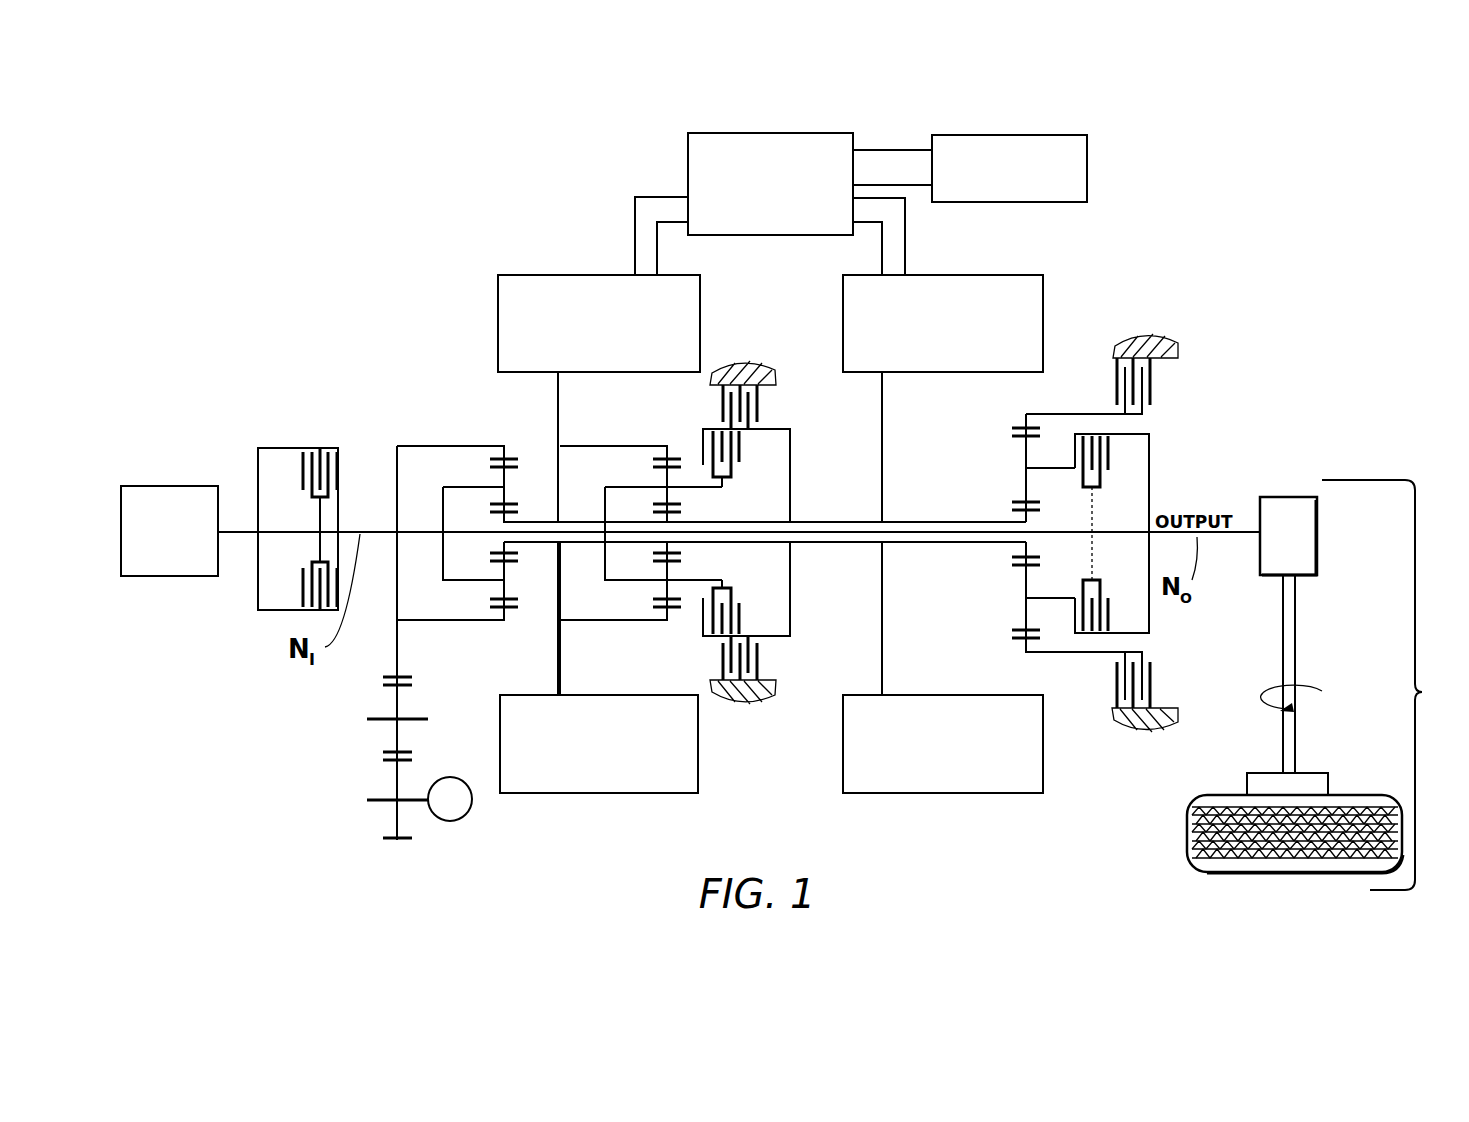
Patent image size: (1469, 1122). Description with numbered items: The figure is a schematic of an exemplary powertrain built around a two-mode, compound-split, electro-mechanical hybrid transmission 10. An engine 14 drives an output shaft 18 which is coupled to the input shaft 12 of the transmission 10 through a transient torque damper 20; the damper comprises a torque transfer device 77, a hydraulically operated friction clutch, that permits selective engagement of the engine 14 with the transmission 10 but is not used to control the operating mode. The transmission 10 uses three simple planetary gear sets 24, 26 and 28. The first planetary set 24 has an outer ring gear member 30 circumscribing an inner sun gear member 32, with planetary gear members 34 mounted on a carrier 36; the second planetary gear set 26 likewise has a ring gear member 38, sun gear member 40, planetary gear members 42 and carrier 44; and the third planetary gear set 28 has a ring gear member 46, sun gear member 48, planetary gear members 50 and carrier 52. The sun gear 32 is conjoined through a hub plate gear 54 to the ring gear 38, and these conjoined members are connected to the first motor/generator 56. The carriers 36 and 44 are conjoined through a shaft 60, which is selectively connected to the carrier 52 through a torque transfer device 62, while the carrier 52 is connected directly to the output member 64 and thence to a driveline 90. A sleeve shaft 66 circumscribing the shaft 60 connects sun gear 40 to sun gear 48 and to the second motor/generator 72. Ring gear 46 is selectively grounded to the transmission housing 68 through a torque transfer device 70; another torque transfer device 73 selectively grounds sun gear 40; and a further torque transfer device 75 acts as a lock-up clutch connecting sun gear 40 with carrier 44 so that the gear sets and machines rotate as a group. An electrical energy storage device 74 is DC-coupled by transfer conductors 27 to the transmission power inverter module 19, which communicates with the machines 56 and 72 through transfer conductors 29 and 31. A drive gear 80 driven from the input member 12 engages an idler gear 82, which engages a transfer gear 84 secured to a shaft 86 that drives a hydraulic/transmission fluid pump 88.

The transmission 10 is at (461, 240).
The input shaft 12 is at (392, 529).
The engine 14 is at (195, 485).
The output shaft 18 is at (245, 529).
The transmission power inverter module 19 is at (687, 152).
The transient torque damper 20 is at (298, 497).
The first planetary gear set 24 is at (478, 538).
The second planetary gear set 26 is at (653, 529).
The transfer conductors 27 is at (892, 148).
The third planetary gear set 28 is at (1037, 533).
The transfer conductors 29 is at (633, 235).
The outer ring gear member 30 is at (510, 458).
The transfer conductors 31 is at (907, 228).
The inner sun gear member 32 is at (520, 493).
The planetary gear members 34 is at (502, 478).
The carrier 36 is at (442, 557).
The outer ring gear member 38 is at (673, 451).
The inner sun gear member 40 is at (670, 522).
The planetary gear members 42 is at (665, 478).
The carrier 44 is at (602, 560).
The outer ring gear member 46 is at (1011, 420).
The inner sun gear member 48 is at (1014, 512).
The planetary gear members 50 is at (1024, 445).
The carrier 52 is at (1147, 521).
The hub plate gear 54 is at (562, 504).
The motor/generator 56 is at (497, 310).
The shaft 60 is at (855, 531).
The torque transfer device 62 is at (1106, 467).
The output member 64 is at (1233, 525).
The sleeve shaft 66 is at (826, 521).
The transmission housing 68 is at (740, 368).
The torque transfer device 70 is at (1110, 384).
The motor/generator 72 is at (1045, 292).
The torque transfer device 73 is at (763, 410).
The electrical energy storage device 74 is at (1088, 157).
The torque transfer device 75 is at (743, 459).
The torque transfer device 77 is at (304, 479).
The drive gear 80 is at (393, 580).
The idler gear 82 is at (395, 710).
The transfer gear 84 is at (392, 818).
The shaft 86 is at (415, 802).
The hydraulic/transmission fluid pump 88 is at (464, 820).
The driveline 90 is at (1423, 693).